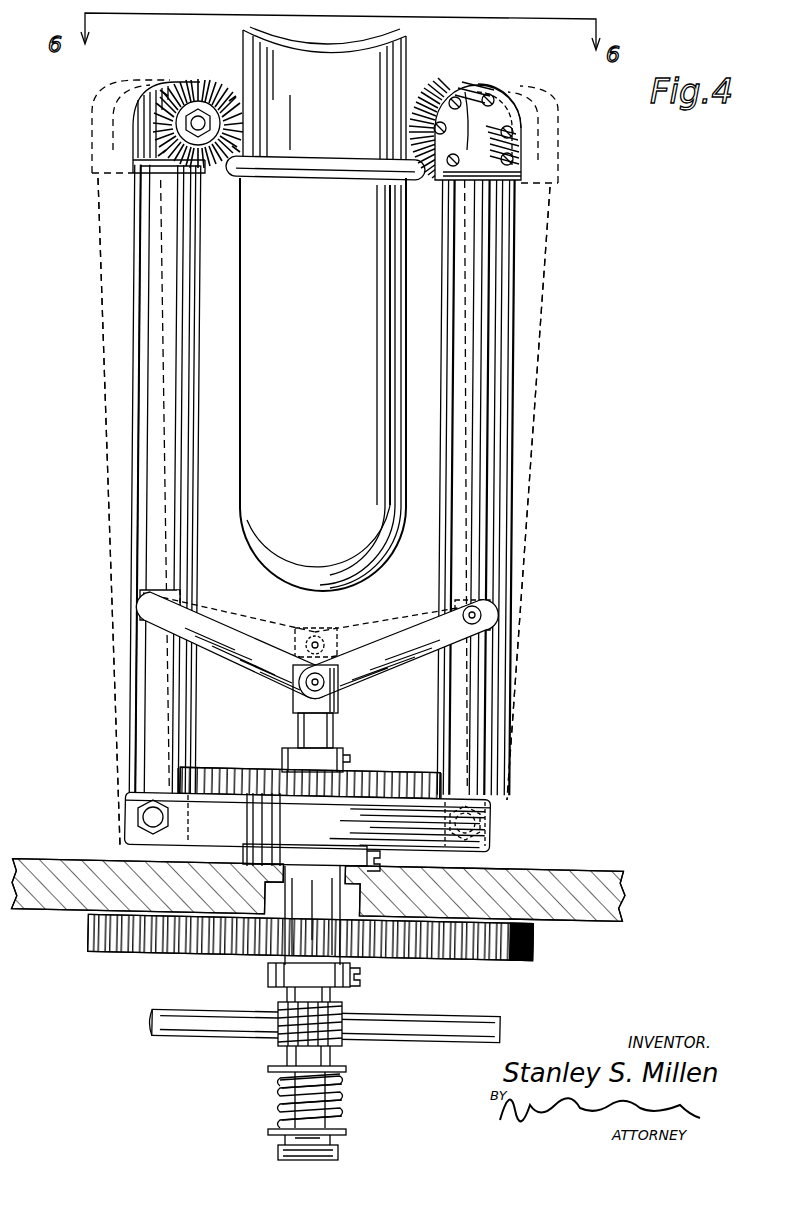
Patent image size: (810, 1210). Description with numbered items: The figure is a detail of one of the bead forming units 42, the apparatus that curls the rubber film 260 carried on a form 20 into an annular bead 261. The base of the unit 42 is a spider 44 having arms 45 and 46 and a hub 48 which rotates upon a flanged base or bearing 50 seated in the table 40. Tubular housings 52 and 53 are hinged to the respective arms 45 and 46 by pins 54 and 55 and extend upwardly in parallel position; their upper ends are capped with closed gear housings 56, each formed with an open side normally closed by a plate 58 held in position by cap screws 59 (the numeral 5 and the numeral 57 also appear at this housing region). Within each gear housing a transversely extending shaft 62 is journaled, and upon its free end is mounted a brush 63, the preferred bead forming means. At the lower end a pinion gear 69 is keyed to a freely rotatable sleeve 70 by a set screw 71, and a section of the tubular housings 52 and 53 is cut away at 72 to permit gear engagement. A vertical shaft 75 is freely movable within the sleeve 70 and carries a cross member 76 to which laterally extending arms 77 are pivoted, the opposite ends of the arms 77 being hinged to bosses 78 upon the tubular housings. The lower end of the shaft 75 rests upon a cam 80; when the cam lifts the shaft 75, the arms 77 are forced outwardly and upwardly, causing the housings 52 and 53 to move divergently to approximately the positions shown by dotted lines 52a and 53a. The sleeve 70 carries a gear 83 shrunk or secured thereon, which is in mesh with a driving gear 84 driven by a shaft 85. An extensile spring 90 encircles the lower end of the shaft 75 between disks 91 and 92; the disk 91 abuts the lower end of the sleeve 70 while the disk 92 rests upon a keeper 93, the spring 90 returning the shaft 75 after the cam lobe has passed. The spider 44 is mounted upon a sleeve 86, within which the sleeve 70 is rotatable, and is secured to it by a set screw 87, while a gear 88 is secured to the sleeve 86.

The brush assembly housing 5 is at (524, 148).
The form 20 is at (396, 62).
The table 40 is at (590, 873).
The bead forming unit 42 is at (545, 298).
The spider 44 is at (245, 847).
The arm 45 is at (140, 800).
The arm 46 is at (447, 798).
The hub 48 is at (305, 904).
The flanged base or bearing 50 is at (388, 876).
The tubular housing 52 is at (138, 270).
The dotted-line position of tubular housing 52a is at (98, 364).
The tubular housing 53 is at (495, 442).
The dotted-line position of tubular housing 53a is at (548, 328).
The pin 54 is at (148, 818).
The pin 55 is at (505, 824).
The gear housing 56 is at (140, 128).
The brush cover plate 57 is at (488, 96).
The plate 58 is at (500, 118).
The cap screw 59 is at (514, 130).
The shaft 62 is at (214, 88).
The brush 63 is at (436, 94).
The pinion gear 69 is at (262, 753).
The sleeve 70 is at (290, 1058).
The set screw 71 is at (346, 759).
The cut-away section 72 is at (195, 766).
The vertical shaft 75 is at (335, 734).
The cross member 76 is at (341, 697).
The arm 77 is at (217, 623).
The boss 78 is at (147, 590).
The cam 80 is at (340, 1153).
The gear 83 is at (336, 1004).
The driving gear 84 is at (342, 1021).
The shaft 85 is at (504, 1023).
The sleeve 86 is at (268, 984).
The set screw 87 is at (352, 976).
The gear 88 is at (535, 951).
The extensile spring 90 is at (342, 1098).
The disk 91 is at (346, 1072).
The disk 92 is at (342, 1134).
The keeper 93 is at (282, 1144).
The rubber film 260 is at (272, 517).
The annular bead 261 is at (340, 178).